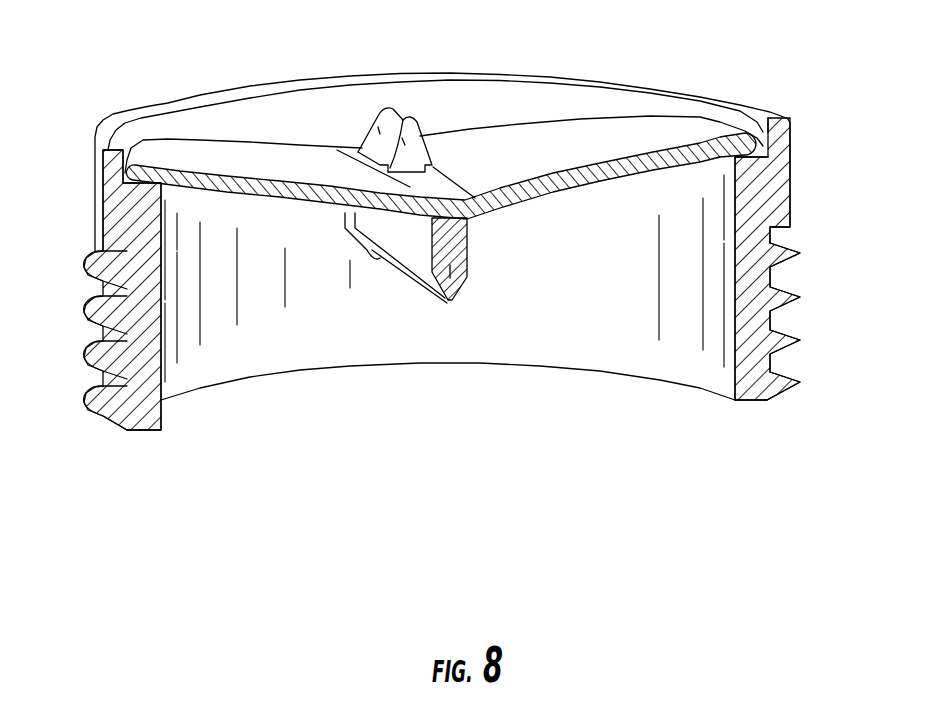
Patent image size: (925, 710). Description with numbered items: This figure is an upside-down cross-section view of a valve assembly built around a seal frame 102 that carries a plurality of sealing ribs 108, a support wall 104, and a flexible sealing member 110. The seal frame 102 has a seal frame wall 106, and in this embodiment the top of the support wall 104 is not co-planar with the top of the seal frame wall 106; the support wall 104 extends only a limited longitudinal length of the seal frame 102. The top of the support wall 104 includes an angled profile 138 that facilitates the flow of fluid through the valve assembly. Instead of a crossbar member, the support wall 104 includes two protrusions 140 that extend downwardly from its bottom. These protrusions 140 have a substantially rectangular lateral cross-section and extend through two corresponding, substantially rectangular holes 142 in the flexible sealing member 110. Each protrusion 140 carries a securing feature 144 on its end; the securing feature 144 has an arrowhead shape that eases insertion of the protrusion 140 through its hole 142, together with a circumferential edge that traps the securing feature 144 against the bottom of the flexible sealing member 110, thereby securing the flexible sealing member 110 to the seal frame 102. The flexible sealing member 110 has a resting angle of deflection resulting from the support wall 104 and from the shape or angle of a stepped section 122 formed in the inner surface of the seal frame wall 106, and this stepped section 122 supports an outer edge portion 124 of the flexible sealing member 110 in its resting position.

The seal frame 102 is at (95, 190).
The support wall 104 is at (445, 297).
The seal frame wall 106 is at (773, 182).
The sealing ribs 108 is at (793, 288).
The flexible sealing member 110 is at (647, 163).
The stepped section 122 is at (137, 117).
The outer edge portion 124 is at (173, 173).
The angled profile 138 is at (410, 268).
The protrusions 140 is at (407, 135).
The holes 142 is at (410, 173).
The securing feature 144 is at (383, 123).